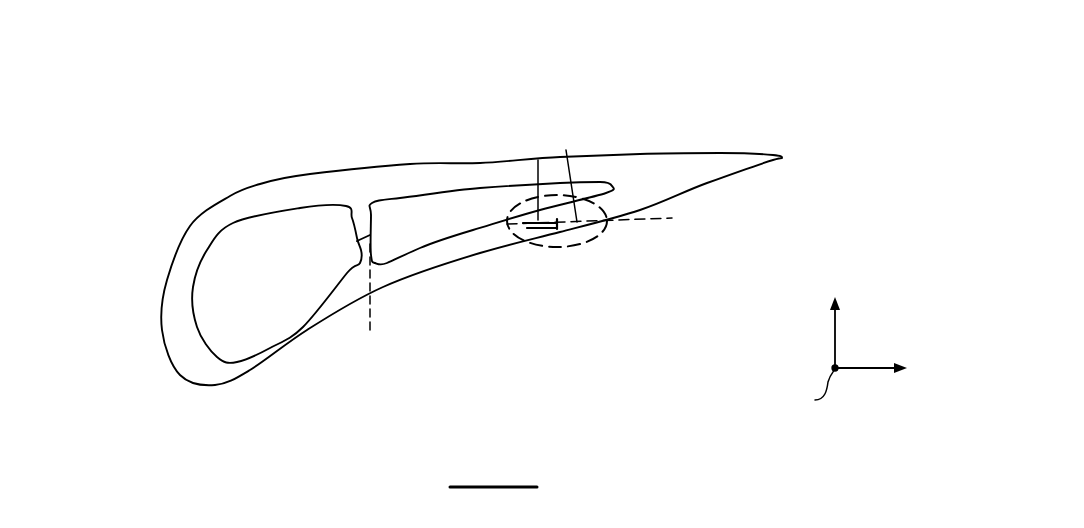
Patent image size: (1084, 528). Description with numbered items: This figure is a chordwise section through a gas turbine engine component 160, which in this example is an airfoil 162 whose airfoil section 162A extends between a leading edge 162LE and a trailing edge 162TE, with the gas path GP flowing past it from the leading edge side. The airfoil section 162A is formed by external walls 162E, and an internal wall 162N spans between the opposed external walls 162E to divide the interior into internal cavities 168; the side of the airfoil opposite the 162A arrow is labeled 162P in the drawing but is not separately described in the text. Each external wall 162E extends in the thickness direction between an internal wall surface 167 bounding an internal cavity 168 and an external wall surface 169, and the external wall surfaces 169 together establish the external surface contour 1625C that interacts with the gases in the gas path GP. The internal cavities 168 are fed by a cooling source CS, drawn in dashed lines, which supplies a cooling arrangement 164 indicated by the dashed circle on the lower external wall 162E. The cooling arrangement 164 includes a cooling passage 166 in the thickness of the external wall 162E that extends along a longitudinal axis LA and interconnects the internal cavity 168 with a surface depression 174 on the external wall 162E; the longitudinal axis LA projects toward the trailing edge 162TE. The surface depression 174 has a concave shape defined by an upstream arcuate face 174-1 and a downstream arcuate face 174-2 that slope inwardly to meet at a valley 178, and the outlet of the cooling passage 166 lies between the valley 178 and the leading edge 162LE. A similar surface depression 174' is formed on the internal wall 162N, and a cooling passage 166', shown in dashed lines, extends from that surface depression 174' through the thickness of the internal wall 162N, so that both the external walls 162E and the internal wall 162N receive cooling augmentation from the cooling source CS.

The gas turbine engine component 160 is at (213, 93).
The airfoil 162 is at (501, 257).
The airfoil section 162A is at (260, 188).
The external wall 162E is at (447, 163).
The internal wall 162N is at (360, 263).
The airfoil pressure side wall 162P is at (314, 328).
The leading edge 162LE is at (173, 363).
The trailing edge 162TE is at (782, 163).
The external surface contour 1625C is at (348, 306).
The cooling arrangement 164 is at (640, 265).
The cooling passage 166 is at (507, 174).
The cooling passage 166' is at (401, 299).
The internal wall surface 167 is at (464, 234).
The internal cavity 168 is at (258, 314).
The external wall surface 169 is at (487, 246).
The surface depression 174 is at (581, 264).
The surface depression 174' is at (306, 239).
The upstream arcuate face 174-1 is at (558, 231).
The downstream arcuate face 174-2 is at (623, 218).
The valley 178 is at (566, 150).
The cooling source CS is at (412, 211).
The longitudinal axis LA is at (484, 223).
The gas path GP is at (140, 307).